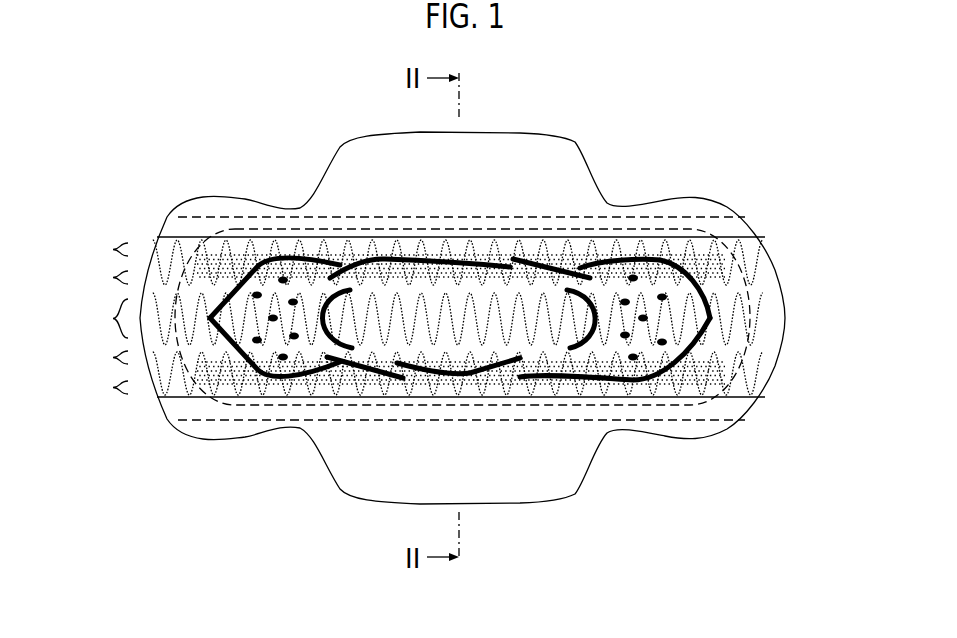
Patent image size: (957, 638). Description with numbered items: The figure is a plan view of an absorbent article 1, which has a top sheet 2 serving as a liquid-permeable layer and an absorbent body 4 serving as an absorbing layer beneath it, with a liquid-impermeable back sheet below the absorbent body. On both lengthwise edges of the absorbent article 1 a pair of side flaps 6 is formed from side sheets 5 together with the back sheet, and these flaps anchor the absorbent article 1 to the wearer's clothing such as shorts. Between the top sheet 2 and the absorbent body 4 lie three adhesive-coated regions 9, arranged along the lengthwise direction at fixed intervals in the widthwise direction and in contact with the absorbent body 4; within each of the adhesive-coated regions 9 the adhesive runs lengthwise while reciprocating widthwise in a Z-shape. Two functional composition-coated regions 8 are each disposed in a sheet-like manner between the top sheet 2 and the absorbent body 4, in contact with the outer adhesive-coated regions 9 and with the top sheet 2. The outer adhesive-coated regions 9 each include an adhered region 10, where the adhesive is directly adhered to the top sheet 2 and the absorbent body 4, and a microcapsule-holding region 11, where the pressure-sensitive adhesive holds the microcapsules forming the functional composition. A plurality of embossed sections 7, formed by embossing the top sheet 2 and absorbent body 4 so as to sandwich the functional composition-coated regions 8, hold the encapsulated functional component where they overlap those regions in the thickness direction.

The absorbent article 1 is at (205, 112).
The top sheet 2 is at (768, 350).
The absorbent body 4 is at (685, 228).
The side sheets 5 is at (745, 226).
The side flaps 6 is at (344, 158).
The embossed sections 7 is at (465, 263).
The functional composition-coated regions 8 is at (217, 238).
The adhesive-coated regions 9 is at (770, 272).
The adhered region 10 is at (106, 321).
The microcapsule-holding region 11 is at (110, 264).